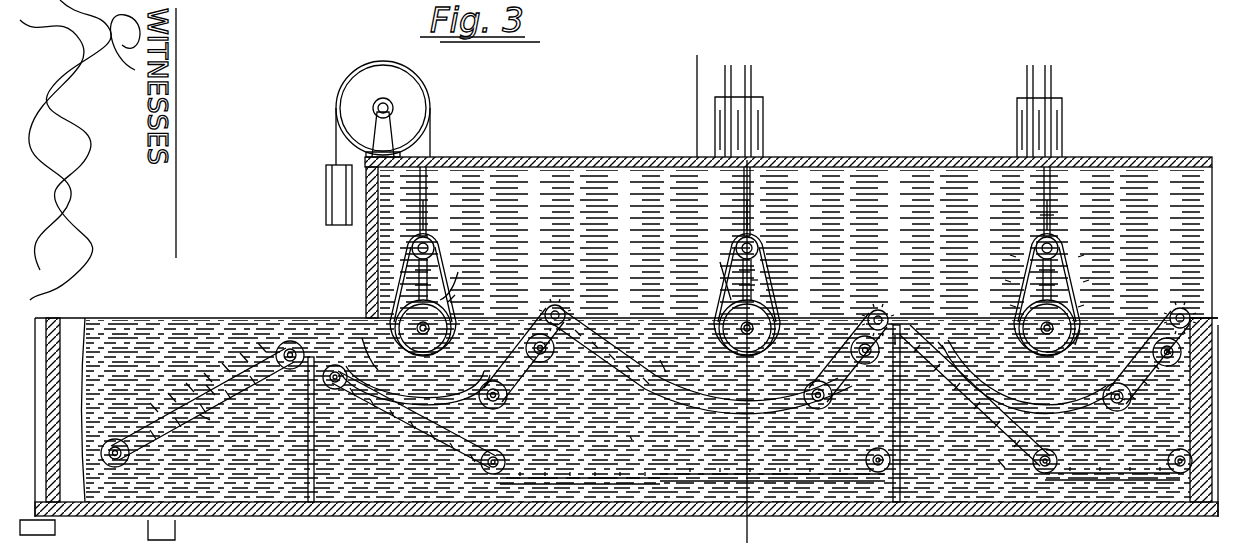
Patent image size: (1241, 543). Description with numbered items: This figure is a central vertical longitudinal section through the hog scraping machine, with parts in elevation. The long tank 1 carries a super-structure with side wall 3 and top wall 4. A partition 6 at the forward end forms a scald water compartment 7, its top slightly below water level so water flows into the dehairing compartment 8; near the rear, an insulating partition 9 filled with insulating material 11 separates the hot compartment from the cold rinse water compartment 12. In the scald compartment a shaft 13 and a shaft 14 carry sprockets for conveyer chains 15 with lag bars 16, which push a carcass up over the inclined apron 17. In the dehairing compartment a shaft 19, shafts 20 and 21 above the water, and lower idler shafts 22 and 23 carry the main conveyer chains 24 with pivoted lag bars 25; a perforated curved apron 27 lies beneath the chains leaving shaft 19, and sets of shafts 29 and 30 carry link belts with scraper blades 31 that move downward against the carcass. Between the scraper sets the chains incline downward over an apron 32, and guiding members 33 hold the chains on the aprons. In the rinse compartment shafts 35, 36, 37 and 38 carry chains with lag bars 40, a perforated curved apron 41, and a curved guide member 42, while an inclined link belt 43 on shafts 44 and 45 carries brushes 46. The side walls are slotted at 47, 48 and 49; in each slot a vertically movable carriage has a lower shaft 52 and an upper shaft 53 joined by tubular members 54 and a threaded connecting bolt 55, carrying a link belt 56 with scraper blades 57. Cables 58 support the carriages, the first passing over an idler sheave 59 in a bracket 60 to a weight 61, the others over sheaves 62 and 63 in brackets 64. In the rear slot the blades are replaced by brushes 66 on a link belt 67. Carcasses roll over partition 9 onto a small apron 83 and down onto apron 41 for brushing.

The tank 1 is at (470, 475).
The side wall 3 is at (619, 348).
The top wall 4 is at (704, 103).
The partition 6 is at (300, 380).
The scald water compartment 7 is at (202, 392).
The dehairing compartment 8 is at (632, 440).
The partition 9 is at (900, 400).
The insulating material 11 is at (1060, 210).
The cold rinse water compartment 12 is at (1105, 478).
The shaft 13 is at (115, 468).
The shaft 14 is at (290, 341).
The conveyer chains 15 is at (205, 410).
The lag bars 16 is at (160, 398).
The inclined apron 17 is at (212, 385).
The shaft 19 is at (334, 363).
The shaft 20 is at (556, 304).
The shaft 21 is at (880, 308).
The shaft 22 is at (495, 476).
The shaft 23 is at (820, 480).
The conveyer chains 24 is at (664, 360).
The lag bars 25 is at (560, 318).
The perforated curved apron 27 is at (358, 344).
The shafts 29 is at (493, 380).
The shafts 30 is at (538, 334).
The scraper blades 31 is at (428, 520).
The apron 32 is at (617, 351).
The guiding members 33 is at (700, 370).
The shaft 35 is at (940, 340).
The shaft 36 is at (1182, 308).
The shaft 37 is at (1180, 475).
The shaft 38 is at (1050, 476).
The lag bars 40 is at (1000, 460).
The perforated curved apron 41 is at (960, 380).
The curved guide member 42 is at (1085, 380).
The link belt 43 is at (1165, 338).
The shaft 44 is at (1125, 400).
The shaft 45 is at (1148, 357).
The brushes 46 is at (1208, 320).
The slot 47 is at (430, 208).
The slot 48 is at (752, 188).
The slot 49 is at (1052, 196).
The lower shaft 52 is at (735, 328).
The upper shaft 53 is at (410, 243).
The tubular members 54 is at (722, 262).
The connecting bolt 55 is at (760, 285).
The link belt 56 is at (463, 276).
The scraper blades 57 is at (462, 295).
The cables 58 is at (430, 180).
The idler sheave 59 is at (428, 95).
The bracket 60 is at (392, 110).
The weight 61 is at (326, 196).
The sheave 62 is at (750, 80).
The sheave 63 is at (722, 72).
The brackets 64 is at (1080, 133).
The brushes 66 is at (1080, 250).
The link belt 67 is at (1085, 330).
The apron 83 is at (903, 335).